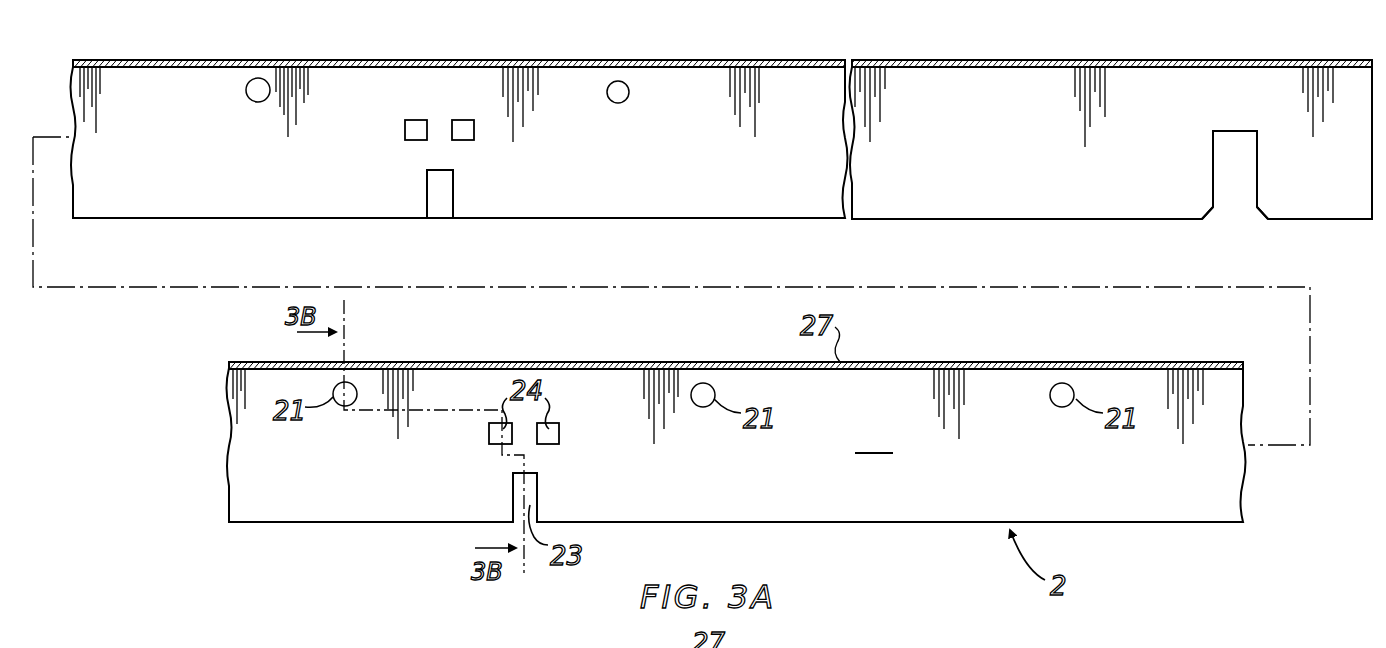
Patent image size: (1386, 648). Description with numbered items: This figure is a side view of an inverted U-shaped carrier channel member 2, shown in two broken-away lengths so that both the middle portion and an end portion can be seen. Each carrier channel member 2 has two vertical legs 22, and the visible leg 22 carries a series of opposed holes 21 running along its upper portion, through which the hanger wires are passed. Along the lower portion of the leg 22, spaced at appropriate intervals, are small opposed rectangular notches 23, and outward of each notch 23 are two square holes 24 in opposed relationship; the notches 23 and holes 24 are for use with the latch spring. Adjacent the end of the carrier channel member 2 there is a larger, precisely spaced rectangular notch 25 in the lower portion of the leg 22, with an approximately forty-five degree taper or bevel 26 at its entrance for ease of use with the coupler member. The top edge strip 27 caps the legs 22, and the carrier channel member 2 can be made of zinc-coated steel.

The carrier channel member 2 is at (685, 223).
The hole 21 is at (248, 95).
The vertical leg 22 is at (940, 151).
The small rectangular notch 23 is at (437, 197).
The square hole 24 is at (464, 128).
The larger rectangular notch 25 is at (1227, 160).
The taper or bevel 26 is at (1206, 222).
The edge strip 27 is at (780, 60).